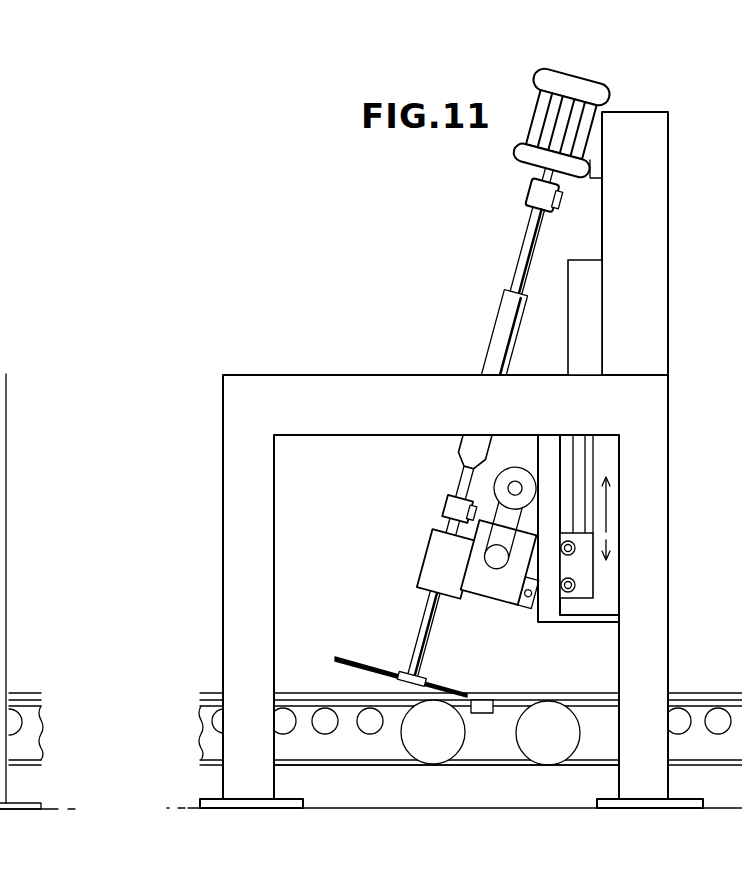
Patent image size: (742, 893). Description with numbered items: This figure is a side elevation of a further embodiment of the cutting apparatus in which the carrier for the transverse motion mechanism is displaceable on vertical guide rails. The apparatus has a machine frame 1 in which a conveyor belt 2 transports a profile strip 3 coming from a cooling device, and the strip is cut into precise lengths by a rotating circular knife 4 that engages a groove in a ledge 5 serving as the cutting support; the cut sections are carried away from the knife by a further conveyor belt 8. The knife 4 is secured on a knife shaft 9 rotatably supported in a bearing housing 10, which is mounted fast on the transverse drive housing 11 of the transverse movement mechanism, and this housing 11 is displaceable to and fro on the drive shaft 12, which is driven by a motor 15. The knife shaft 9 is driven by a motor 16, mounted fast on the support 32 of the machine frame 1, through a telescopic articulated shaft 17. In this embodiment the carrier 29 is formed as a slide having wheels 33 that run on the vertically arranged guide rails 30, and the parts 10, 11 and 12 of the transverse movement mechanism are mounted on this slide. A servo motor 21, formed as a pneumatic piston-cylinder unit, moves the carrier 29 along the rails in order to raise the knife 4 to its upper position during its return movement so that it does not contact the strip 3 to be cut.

The machine frame 1 is at (317, 382).
The conveyor belt 2 is at (595, 760).
The profile strip 3 is at (688, 697).
The circular knife 4 is at (348, 660).
The ledge 5 is at (482, 713).
The conveyor belt 8 is at (337, 760).
The knife shaft 9 is at (417, 640).
The bearing housing 10 is at (433, 553).
The transverse drive housing 11 is at (498, 604).
The drive shaft 12 is at (495, 590).
The motor 15 is at (520, 475).
The motor 16 is at (557, 76).
The articulated shaft 17 is at (502, 338).
The servo motor 21 is at (578, 323).
The carrier 29 is at (580, 567).
The guide rails 30 is at (550, 470).
The support 32 is at (648, 225).
The wheels 33 is at (577, 539).